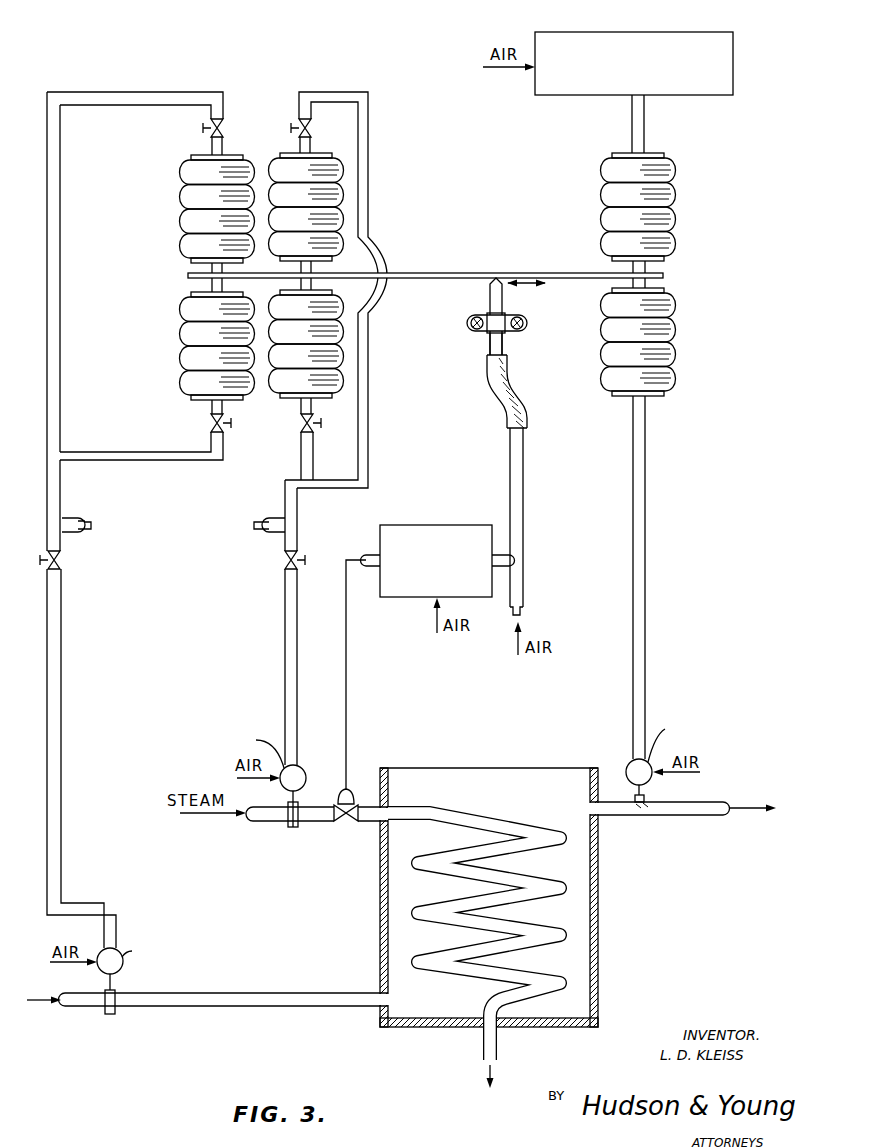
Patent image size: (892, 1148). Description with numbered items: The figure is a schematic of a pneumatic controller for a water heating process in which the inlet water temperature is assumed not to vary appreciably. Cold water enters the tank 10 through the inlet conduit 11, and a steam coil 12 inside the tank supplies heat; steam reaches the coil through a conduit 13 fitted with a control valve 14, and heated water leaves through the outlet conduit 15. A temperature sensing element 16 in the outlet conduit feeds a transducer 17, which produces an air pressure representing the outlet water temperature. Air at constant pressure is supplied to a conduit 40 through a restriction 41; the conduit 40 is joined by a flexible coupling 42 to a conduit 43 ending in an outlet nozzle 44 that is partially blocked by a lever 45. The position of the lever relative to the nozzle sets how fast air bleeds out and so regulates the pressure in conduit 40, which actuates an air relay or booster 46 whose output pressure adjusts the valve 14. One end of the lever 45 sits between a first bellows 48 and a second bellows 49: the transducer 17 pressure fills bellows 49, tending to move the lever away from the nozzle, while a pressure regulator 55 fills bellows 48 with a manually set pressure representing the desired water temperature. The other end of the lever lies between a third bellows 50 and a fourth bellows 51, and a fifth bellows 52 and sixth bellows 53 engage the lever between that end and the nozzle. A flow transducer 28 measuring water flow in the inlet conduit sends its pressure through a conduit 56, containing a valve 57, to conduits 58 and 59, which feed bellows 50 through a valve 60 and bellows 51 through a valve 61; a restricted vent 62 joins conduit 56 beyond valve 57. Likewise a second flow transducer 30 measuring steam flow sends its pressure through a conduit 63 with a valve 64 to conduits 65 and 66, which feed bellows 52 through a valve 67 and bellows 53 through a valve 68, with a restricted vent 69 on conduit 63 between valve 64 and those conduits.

The tank 10 is at (599, 923).
The inlet conduit 11 is at (213, 1006).
The steam coil 12 is at (488, 816).
The conduit 13 is at (371, 820).
The control valve 14 is at (337, 822).
The outlet conduit 15 is at (615, 816).
The temperature sensing element 16 is at (652, 818).
The transducer 17 is at (632, 768).
The flow transducer 28 is at (124, 967).
The second flow transducer 30 is at (302, 768).
The conduit 40 is at (524, 470).
The restriction 41 is at (522, 611).
The flexible coupling 42 is at (513, 397).
The conduit 43 is at (489, 342).
The outlet nozzle 44 is at (489, 283).
The lever 45 is at (459, 273).
The air relay or booster 46 is at (453, 525).
The first bellows 48 is at (672, 200).
The second bellows 49 is at (674, 332).
The third bellows 50 is at (186, 206).
The fourth bellows 51 is at (192, 357).
The fifth bellows 52 is at (344, 200).
The sixth bellows 53 is at (344, 366).
The pressure regulator 55 is at (702, 40).
The conduit 56 is at (63, 650).
The valve 57 is at (62, 565).
The conduit 58 is at (61, 288).
The conduit 59 is at (96, 452).
The valve 60 is at (225, 131).
The valve 61 is at (211, 426).
The restricted vent 62 is at (88, 520).
The conduit 63 is at (285, 645).
The valve 64 is at (284, 556).
The conduit 65 is at (369, 430).
The conduit 66 is at (300, 457).
The valve 67 is at (312, 130).
The valve 68 is at (300, 426).
The restricted vent 69 is at (262, 520).